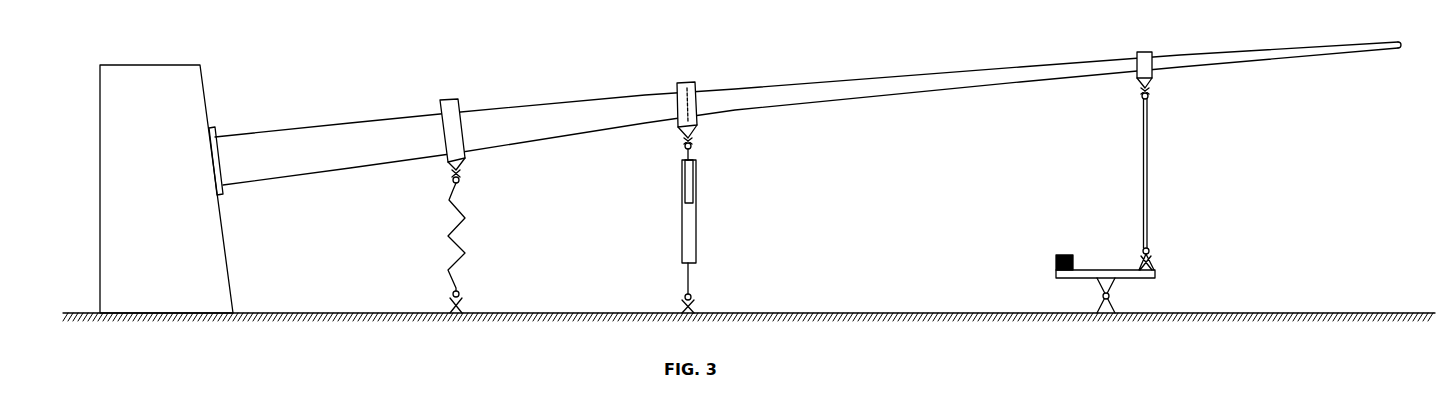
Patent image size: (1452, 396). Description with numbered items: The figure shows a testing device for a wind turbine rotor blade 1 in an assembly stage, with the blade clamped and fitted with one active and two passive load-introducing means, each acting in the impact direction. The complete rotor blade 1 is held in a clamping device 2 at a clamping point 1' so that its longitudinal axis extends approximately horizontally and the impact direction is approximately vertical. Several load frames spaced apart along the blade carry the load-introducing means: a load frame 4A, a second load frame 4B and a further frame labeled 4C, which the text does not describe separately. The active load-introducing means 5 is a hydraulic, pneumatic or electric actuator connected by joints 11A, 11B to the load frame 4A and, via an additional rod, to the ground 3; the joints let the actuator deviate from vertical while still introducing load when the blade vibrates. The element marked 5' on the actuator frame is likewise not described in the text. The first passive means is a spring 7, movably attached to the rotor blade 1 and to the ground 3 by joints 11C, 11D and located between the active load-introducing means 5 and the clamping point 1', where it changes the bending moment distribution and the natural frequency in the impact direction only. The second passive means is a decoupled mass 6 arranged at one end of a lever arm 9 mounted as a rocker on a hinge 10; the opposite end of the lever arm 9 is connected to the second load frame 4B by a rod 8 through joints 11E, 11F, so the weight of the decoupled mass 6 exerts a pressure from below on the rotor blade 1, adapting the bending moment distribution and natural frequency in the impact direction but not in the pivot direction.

The rotor blade 1 is at (808, 113).
The clamping point 1' is at (224, 150).
The clamping device 2 is at (100, 100).
The ground 3 is at (313, 313).
The load frame 4A is at (677, 85).
The second load frame 4B is at (1152, 82).
The clamp 4C is at (441, 100).
The active load-introducing means 5 is at (701, 221).
The pin 5' is at (705, 95).
The decoupled mass 6 is at (1058, 255).
The spring 7 is at (465, 219).
The rod 8 is at (1150, 207).
The lever arm 9 is at (1157, 276).
The hinge 10 is at (1110, 297).
The joint 11A is at (685, 148).
The joint 11B is at (685, 296).
The joint 11C is at (452, 182).
The joint 11D is at (453, 295).
The joint 11E is at (1142, 97).
The joint 11F is at (1143, 250).